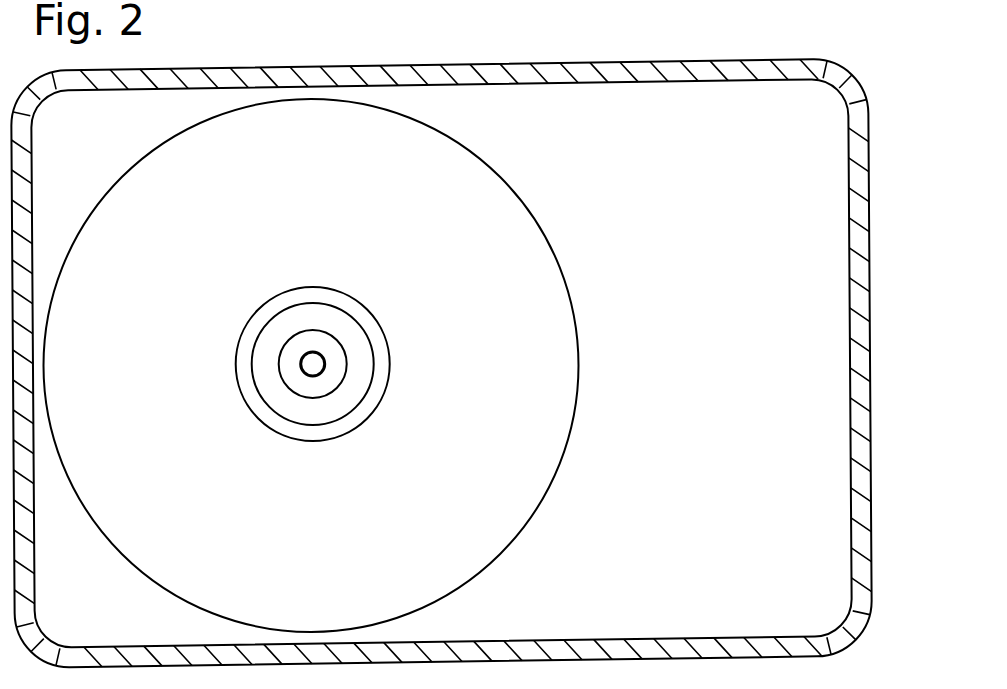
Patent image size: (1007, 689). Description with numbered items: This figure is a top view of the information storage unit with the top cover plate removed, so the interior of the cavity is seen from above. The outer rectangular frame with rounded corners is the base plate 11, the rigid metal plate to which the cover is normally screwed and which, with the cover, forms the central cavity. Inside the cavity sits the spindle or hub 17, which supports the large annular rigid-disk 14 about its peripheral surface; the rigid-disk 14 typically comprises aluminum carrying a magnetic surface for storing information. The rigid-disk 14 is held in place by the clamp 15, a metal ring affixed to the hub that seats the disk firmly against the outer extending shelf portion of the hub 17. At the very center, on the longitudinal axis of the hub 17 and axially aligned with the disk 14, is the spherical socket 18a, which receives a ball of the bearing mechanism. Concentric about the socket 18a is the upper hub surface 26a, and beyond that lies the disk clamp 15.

The base plate 11 is at (727, 51).
The rigid-disk 14 is at (567, 282).
The clamp 15 is at (235, 357).
The hub 17 is at (277, 313).
The spherical socket 18a is at (313, 364).
The upper hub surface 26a is at (348, 361).